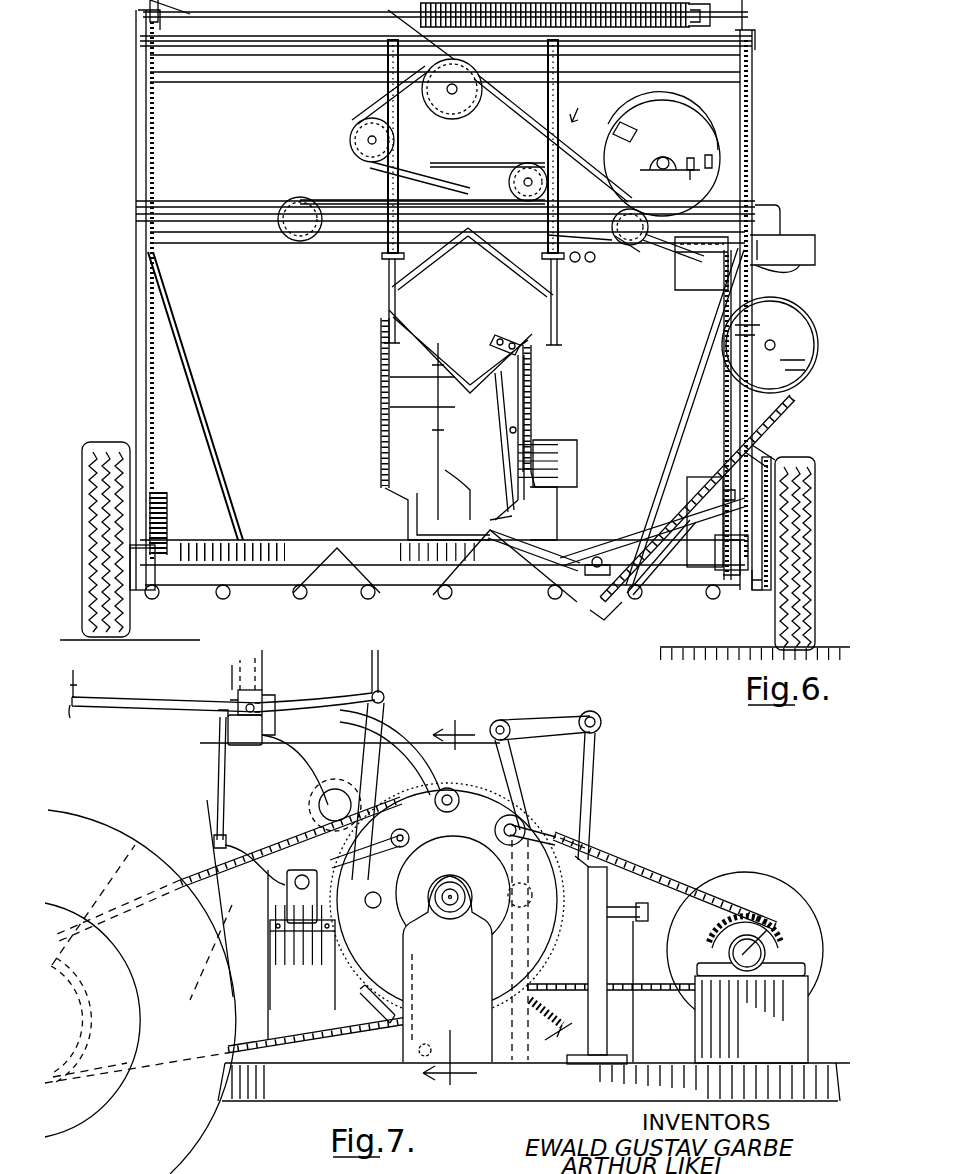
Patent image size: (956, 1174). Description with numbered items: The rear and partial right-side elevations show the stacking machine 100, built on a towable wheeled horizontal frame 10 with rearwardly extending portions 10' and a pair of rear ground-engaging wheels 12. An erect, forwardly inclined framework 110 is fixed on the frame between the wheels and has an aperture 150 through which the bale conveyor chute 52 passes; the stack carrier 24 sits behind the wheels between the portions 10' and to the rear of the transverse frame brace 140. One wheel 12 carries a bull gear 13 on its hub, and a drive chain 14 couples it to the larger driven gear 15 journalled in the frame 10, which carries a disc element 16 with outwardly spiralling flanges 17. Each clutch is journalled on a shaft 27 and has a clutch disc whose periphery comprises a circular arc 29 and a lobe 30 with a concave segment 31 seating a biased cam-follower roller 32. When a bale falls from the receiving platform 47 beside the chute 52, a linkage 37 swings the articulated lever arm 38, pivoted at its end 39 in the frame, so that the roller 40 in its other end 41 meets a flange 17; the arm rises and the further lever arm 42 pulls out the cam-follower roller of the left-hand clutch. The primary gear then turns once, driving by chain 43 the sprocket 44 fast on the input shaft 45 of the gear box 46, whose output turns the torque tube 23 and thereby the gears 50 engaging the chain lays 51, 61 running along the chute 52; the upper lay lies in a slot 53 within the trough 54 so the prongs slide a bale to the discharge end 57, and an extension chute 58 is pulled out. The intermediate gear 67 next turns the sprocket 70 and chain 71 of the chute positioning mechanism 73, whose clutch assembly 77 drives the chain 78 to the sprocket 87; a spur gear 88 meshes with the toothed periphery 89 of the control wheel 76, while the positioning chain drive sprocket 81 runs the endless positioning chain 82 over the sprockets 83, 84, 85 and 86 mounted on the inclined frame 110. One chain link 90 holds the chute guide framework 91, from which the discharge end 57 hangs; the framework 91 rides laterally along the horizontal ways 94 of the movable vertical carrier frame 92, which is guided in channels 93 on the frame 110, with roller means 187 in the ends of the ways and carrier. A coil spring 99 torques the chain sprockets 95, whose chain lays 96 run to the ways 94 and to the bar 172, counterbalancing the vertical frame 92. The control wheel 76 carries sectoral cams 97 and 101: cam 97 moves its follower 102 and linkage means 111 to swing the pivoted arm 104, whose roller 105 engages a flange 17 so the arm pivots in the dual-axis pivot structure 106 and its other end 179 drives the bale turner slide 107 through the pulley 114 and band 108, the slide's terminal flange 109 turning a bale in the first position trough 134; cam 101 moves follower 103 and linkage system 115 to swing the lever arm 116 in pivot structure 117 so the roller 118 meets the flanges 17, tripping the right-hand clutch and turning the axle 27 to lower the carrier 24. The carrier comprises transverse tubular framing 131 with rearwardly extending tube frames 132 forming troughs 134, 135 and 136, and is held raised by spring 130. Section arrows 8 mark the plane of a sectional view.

In FIG. 7, the section line 8- 8 is at (450, 906).
In FIG. 7, the horizontal frame 10 is at (534, 1057).
In FIG. 6, the rearwardly extending frame portions 10' is at (399, 555).
In FIG. 6, the ground-engaging wheels 12 is at (92, 443).
In FIG. 7, the ground-engaging wheels 12 is at (95, 828).
In FIG. 6, the bull gear 13 is at (762, 590).
In FIG. 7, the bull gear 13 is at (125, 845).
In FIG. 6, the drive chain 14 is at (775, 440).
In FIG. 7, the drive chain 14 is at (185, 860).
In FIG. 7, the driven gear 15 is at (540, 800).
In FIG. 7, the disc element 16 is at (585, 870).
In FIG. 7, the spiralling flanges 17 is at (435, 822).
In FIG. 6, the torque tube 23 is at (630, 535).
In FIG. 6, the stack carrier 24 is at (355, 500).
In FIG. 7, the shaft 27 is at (470, 940).
In FIG. 7, the circular arc 29 is at (570, 835).
In FIG. 7, the lobe 30 is at (325, 990).
In FIG. 7, the circular segment 31 is at (435, 895).
In FIG. 7, the cam-follower roller 32 is at (580, 855).
In FIG. 7, the linkage 37 is at (625, 1012).
In FIG. 7, the articulated lever arm 38 is at (590, 752).
In FIG. 7, the pivot end 39 is at (650, 870).
In FIG. 7, the roller 40 is at (525, 820).
In FIG. 7, the lever arm end 41 is at (530, 825).
In FIG. 7, the further lever arm 42 is at (577, 720).
In FIG. 7, the chain 43 is at (690, 880).
In FIG. 7, the sprocket 44 is at (765, 925).
In FIG. 7, the input shaft 45 is at (780, 920).
In FIG. 6, the gear box 46 is at (705, 478).
In FIG. 7, the gear box 46 is at (770, 875).
In FIG. 6, the receiving platform 47 is at (570, 445).
In FIG. 6, the gears 50 is at (525, 350).
In FIG. 6, the chain lay 51 is at (530, 370).
In FIG. 6, the bale conveyor chute 52 is at (390, 375).
In FIG. 6, the slot 53 is at (500, 335).
In FIG. 6, the trough 54 is at (515, 352).
In FIG. 6, the discharge end 57 is at (433, 322).
In FIG. 6, the extension chute 58 is at (392, 407).
In FIG. 6, the chain lay 61 is at (532, 400).
In FIG. 7, the intermediate gear 67 is at (350, 783).
In FIG. 7, the chain drive sprocket 70 is at (330, 780).
In FIG. 6, the chain 71 is at (722, 406).
In FIG. 7, the chain 71 is at (382, 668).
In FIG. 6, the chute positioning mechanism 73 is at (580, 104).
In FIG. 6, the control wheel 76 is at (680, 104).
In FIG. 6, the chute positioning clutch assembly 77 is at (803, 220).
In FIG. 6, the drive chain 78 is at (670, 272).
In FIG. 6, the positioning chain drive sprocket 81 is at (624, 246).
In FIG. 6, the endless positioning chain 82 is at (518, 108).
In FIG. 6, the sprocket 83 is at (292, 236).
In FIG. 6, the sprocket 84 is at (528, 162).
In FIG. 6, the sprocket 85 is at (350, 140).
In FIG. 6, the sprocket 86 is at (445, 112).
In FIG. 6, the chain sprocket 87 is at (636, 246).
In FIG. 6, the spur gear 88 is at (612, 236).
In FIG. 6, the toothed periphery 89 is at (636, 124).
In FIG. 6, the chain link 90 is at (380, 4).
In FIG. 6, the chute guide framework 91 is at (350, 182).
In FIG. 6, the vertical carrier frame 92 is at (150, 148).
In FIG. 6, the channels 93 is at (140, 292).
In FIG. 6, the horizontal ways 94 is at (200, 42).
In FIG. 6, the chain sprockets 95 is at (150, 8).
In FIG. 6, the chain 96 is at (148, 118).
In FIG. 6, the sectoral cam 97 is at (615, 128).
In FIG. 6, the coil spring 99 is at (640, 30).
In FIG. 6, the stacking machine 100 is at (110, 240).
In FIG. 6, the sectoral cam 101 is at (712, 185).
In FIG. 6, the cam follower 102 is at (712, 160).
In FIG. 6, the cam follower 103 is at (668, 176).
In FIG. 7, the pivoted arm 104 is at (395, 730).
In FIG. 7, the roller 105 is at (490, 775).
In FIG. 7, the dual-axis pivot structure 106 is at (262, 700).
In FIG. 6, the bale turner slide 107 is at (662, 480).
In FIG. 7, the band 108 is at (78, 688).
In FIG. 6, the terminal flange 109 is at (590, 615).
In FIG. 6, the erect framework 110 is at (140, 165).
In FIG. 7, the erect framework 110 is at (218, 735).
In FIG. 7, the linkage means 111 is at (262, 661).
In FIG. 6, the pulley 114 is at (800, 345).
In FIG. 7, the linkage system 115 is at (228, 680).
In FIG. 7, the lever arm 116 is at (372, 810).
In FIG. 7, the pivot structure 117 is at (290, 896).
In FIG. 7, the roller 118 is at (450, 885).
In FIG. 6, the spring 130 is at (165, 535).
In FIG. 6, the tubular framing 131 is at (295, 598).
In FIG. 6, the tube frames 132 is at (155, 598).
In FIG. 6, the first position trough 134 is at (595, 555).
In FIG. 6, the trough 135 is at (390, 548).
In FIG. 6, the trough 136 is at (288, 548).
In FIG. 6, the transverse frame brace 140 is at (262, 545).
In FIG. 6, the aperture 150 is at (306, 334).
In FIG. 6, the bar 172 is at (258, 200).
In FIG. 7, the arm end 179 is at (76, 708).
In FIG. 6, the roller means 187 is at (325, 73).